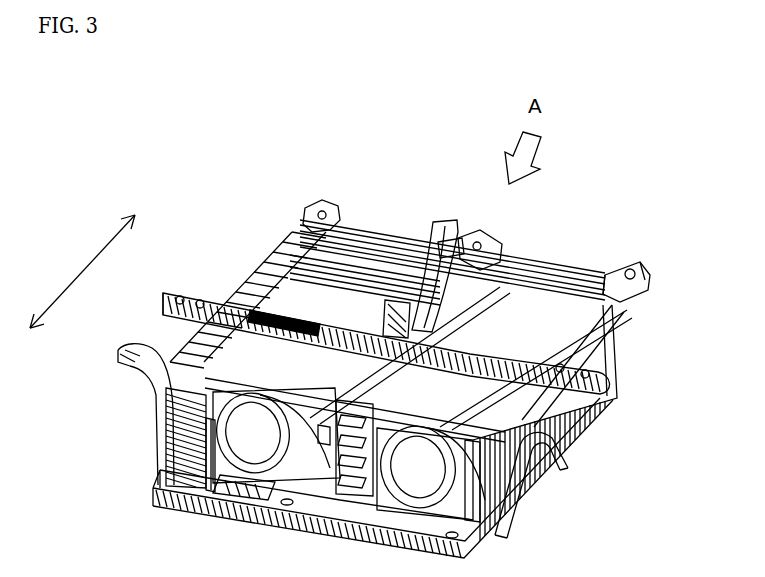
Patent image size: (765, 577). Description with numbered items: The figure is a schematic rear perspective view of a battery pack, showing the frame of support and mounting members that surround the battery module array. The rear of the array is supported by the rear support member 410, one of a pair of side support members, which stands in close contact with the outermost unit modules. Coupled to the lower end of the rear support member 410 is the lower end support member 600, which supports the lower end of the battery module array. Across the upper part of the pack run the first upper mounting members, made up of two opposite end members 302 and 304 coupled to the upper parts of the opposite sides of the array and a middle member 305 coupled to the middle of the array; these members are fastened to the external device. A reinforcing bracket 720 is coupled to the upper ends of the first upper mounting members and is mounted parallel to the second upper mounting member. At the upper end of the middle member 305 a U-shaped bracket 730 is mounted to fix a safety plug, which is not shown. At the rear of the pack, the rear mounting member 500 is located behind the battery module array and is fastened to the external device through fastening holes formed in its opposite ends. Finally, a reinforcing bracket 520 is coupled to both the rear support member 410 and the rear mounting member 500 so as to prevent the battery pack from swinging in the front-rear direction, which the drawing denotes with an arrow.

The end member 302 is at (322, 206).
The end member 304 is at (636, 268).
The middle member 305 is at (488, 240).
The rear support member 410 is at (206, 488).
The rear mounting member 500 is at (142, 352).
The reinforcing bracket 520 is at (178, 437).
The lower end support member 600 is at (587, 467).
The reinforcing bracket 720 is at (290, 240).
The U-shaped bracket 730 is at (444, 236).